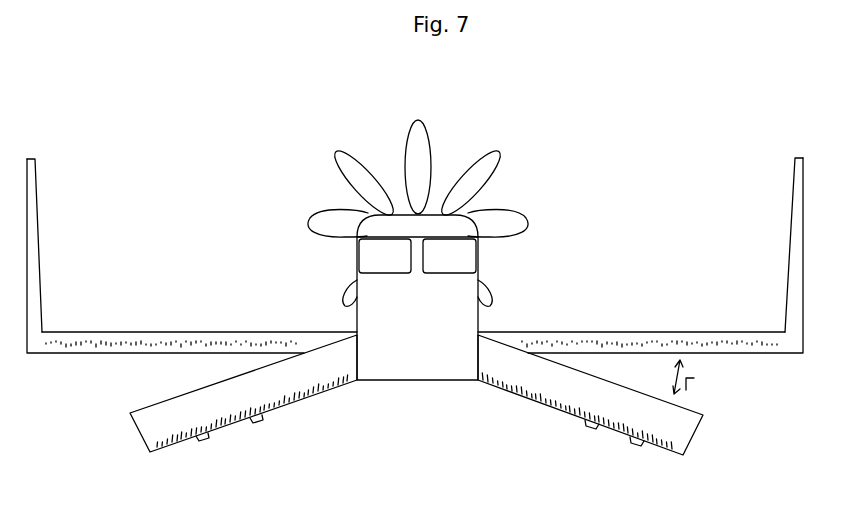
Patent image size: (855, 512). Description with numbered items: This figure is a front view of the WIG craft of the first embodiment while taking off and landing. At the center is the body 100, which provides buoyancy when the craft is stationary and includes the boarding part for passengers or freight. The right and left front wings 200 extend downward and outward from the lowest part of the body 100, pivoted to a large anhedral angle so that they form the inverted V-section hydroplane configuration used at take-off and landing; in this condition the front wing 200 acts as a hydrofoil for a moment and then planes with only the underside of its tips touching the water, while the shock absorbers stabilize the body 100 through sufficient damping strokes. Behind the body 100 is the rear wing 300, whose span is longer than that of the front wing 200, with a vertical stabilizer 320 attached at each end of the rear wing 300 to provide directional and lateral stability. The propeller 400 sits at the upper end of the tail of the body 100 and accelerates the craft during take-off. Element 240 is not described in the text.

The body 100 is at (458, 293).
The front wing 200 is at (178, 410).
The support feet 240 is at (636, 458).
The rear wing 300 is at (122, 337).
The vertical stabilizer 320 is at (40, 207).
The propeller 400 is at (416, 143).